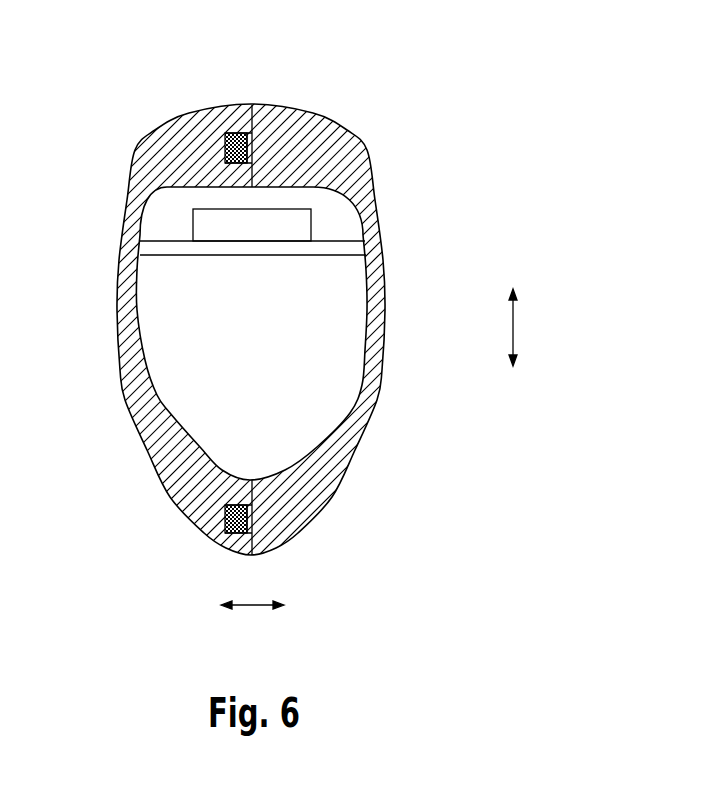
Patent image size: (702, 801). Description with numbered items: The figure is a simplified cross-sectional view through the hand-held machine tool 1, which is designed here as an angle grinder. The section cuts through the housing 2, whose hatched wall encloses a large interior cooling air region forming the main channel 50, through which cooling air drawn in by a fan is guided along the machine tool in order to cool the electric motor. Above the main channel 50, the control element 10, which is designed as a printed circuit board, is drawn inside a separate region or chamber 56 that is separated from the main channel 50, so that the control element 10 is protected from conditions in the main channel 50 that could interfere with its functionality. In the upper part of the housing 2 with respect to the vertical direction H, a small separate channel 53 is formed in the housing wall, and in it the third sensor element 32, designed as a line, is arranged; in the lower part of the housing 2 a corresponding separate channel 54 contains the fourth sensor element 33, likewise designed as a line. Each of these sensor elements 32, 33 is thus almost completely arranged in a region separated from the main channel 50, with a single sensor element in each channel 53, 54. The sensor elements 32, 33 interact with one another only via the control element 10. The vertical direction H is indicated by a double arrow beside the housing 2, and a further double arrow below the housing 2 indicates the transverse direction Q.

The hand-held machine tool 1 is at (370, 132).
The housing 2 is at (283, 103).
The control element 10 is at (300, 228).
The third sensor element 32 is at (225, 150).
The fourth sensor element 33 is at (226, 521).
The main channel 50 is at (193, 380).
The separate channel 53 is at (228, 133).
The separate channel 54 is at (225, 535).
The chamber 56 is at (337, 212).
The vertical direction H is at (513, 328).
The transverse direction Q is at (250, 606).